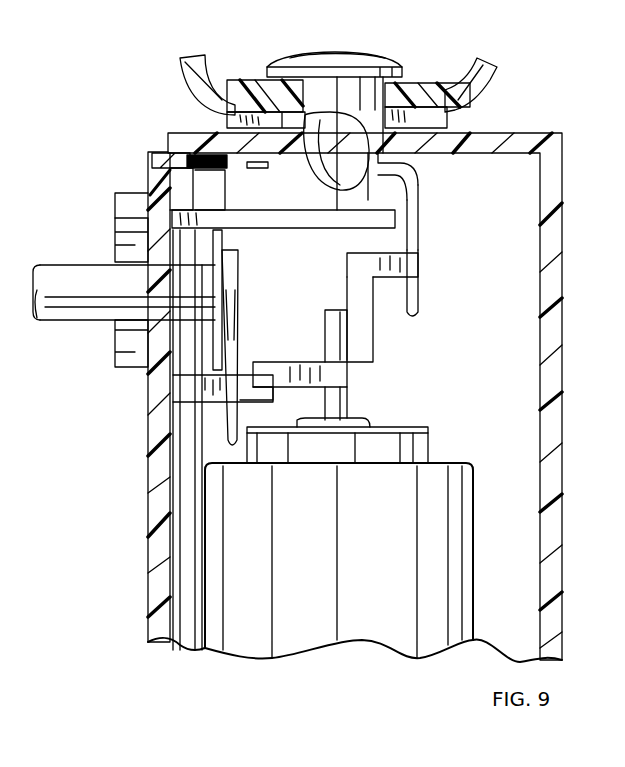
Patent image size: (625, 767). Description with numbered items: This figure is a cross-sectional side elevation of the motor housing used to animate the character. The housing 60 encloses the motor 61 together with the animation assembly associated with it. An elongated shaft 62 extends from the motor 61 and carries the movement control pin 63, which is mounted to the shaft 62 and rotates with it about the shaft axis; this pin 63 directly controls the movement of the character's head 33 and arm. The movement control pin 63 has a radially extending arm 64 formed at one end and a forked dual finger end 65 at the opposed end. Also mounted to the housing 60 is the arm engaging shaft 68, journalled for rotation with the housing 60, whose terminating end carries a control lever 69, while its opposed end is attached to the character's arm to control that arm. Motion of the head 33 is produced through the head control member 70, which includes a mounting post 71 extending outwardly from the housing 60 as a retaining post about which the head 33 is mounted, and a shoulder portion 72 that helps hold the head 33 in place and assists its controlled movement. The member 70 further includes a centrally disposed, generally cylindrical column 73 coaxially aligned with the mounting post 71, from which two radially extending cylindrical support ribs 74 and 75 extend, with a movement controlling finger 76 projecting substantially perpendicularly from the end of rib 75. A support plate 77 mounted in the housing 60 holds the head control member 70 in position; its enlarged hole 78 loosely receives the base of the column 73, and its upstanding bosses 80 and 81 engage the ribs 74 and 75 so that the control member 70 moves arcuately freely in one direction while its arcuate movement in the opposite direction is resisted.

The head 33 is at (483, 95).
The housing 60 is at (148, 510).
The motor 61 is at (313, 533).
The elongated shaft 62 is at (347, 397).
The movement control pin 63 is at (373, 338).
The radially extending arm 64 is at (190, 400).
The forked dual finger end 65 is at (413, 267).
The arm engaging shaft 68 is at (72, 275).
The control lever 69 is at (217, 427).
The head control member 70 is at (450, 120).
The mounting post 71 is at (348, 48).
The shoulder portion 72 is at (227, 118).
The column 73 is at (375, 72).
The support rib 74 is at (245, 183).
The support rib 75 is at (423, 182).
The movement controlling finger 76 is at (417, 283).
The support plate 77 is at (118, 235).
The enlarged hole 78 is at (378, 230).
The upstanding boss 80 is at (415, 170).
The upstanding boss 81 is at (232, 152).